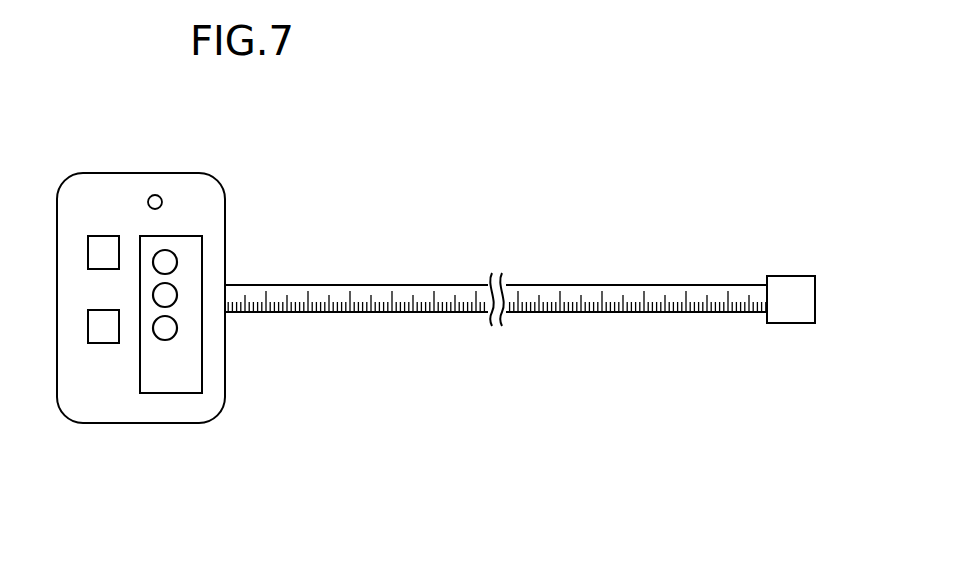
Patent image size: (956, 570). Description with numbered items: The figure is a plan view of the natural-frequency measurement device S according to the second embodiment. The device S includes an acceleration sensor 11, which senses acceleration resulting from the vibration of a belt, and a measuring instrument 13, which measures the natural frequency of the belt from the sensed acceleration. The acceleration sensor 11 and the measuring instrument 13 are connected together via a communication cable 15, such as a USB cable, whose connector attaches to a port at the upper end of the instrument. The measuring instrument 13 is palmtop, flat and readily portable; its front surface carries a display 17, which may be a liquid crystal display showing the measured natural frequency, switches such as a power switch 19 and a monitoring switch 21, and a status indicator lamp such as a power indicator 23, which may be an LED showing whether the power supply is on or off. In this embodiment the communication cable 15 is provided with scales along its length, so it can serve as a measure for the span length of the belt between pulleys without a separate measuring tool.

The natural-frequency measurement device S is at (68, 128).
The acceleration sensor 11 is at (793, 275).
The measuring instrument 13 is at (118, 173).
The communication cable 15 is at (380, 284).
The display 17 is at (168, 393).
The power switch 19 is at (96, 327).
The monitoring switch 21 is at (96, 253).
The power indicator 23 is at (157, 195).